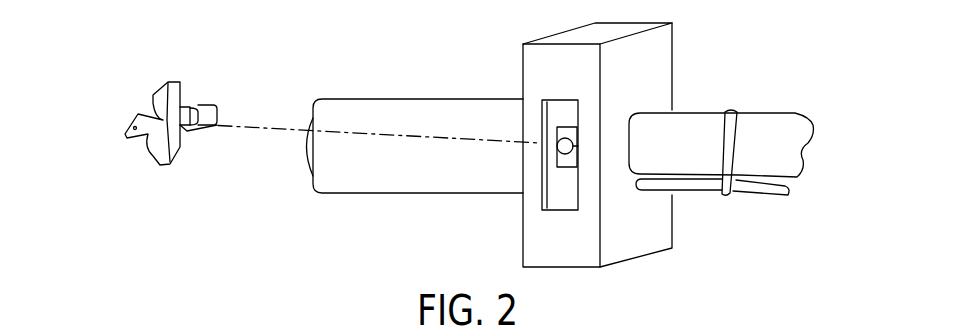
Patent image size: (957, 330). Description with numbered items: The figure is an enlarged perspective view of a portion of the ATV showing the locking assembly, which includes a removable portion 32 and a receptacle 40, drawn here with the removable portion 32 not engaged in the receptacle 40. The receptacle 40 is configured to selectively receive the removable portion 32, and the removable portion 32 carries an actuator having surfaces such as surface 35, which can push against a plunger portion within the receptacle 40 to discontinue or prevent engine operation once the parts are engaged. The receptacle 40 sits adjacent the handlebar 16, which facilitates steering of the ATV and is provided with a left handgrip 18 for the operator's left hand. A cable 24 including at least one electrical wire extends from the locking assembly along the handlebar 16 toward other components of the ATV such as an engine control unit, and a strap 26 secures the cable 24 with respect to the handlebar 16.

The removable portion 32 is at (128, 104).
The surface 35 is at (208, 131).
The left handgrip 18 is at (458, 98).
The receptacle 40 is at (663, 53).
The strap 26 is at (722, 150).
The handlebar 16 is at (760, 95).
The cable 24 is at (758, 196).